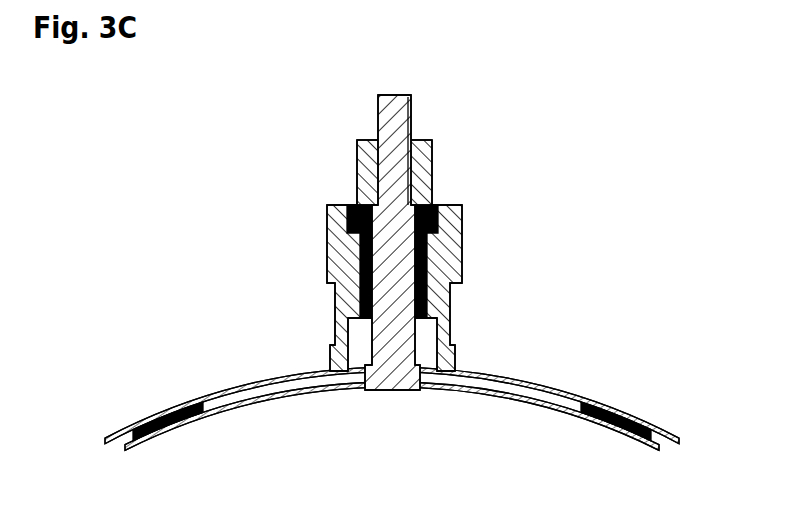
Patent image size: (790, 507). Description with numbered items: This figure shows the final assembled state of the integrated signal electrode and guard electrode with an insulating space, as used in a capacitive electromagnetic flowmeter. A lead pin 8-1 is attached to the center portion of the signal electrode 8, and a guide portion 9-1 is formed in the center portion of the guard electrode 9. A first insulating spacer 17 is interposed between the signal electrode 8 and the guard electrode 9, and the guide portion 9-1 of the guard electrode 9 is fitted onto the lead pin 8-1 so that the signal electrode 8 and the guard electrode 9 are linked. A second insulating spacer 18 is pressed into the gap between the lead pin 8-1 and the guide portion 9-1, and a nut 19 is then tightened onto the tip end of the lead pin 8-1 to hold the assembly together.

The lead pin 8-1 is at (386, 118).
The nut 19 is at (433, 157).
The second insulating spacer 18 is at (440, 214).
The guide portion 9-1 is at (448, 303).
The guard electrode 9 is at (257, 378).
The signal electrode 8 is at (295, 392).
The first insulating spacer 17 is at (168, 407).